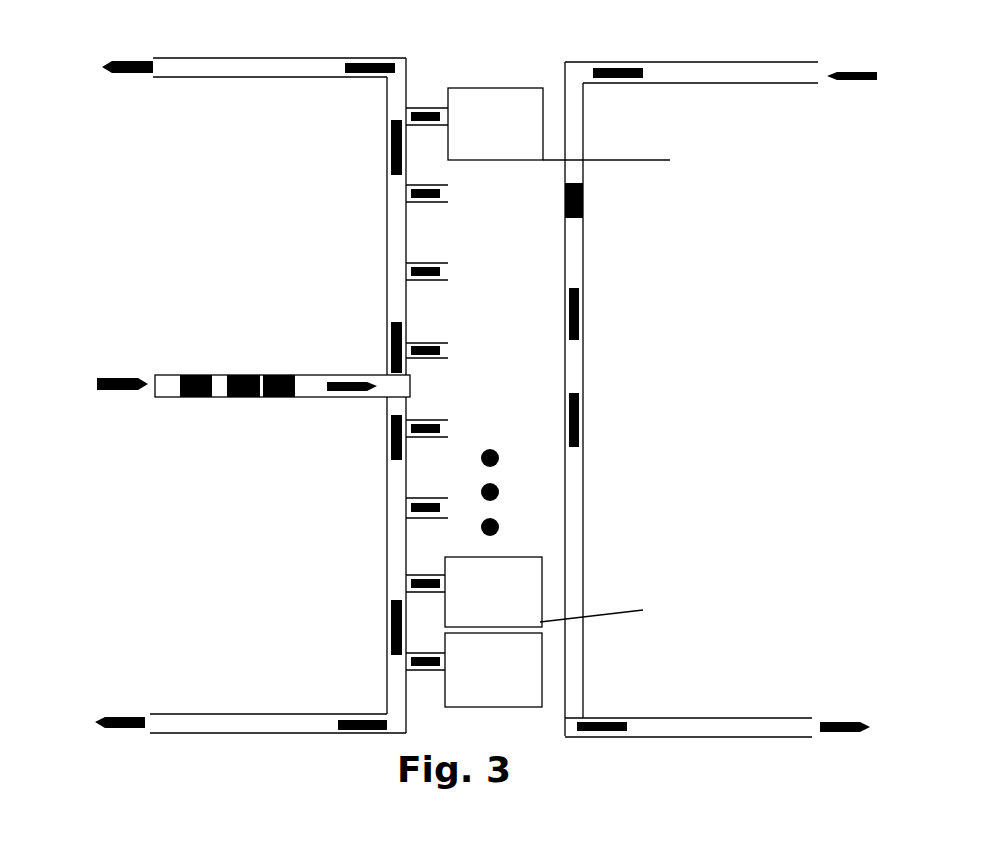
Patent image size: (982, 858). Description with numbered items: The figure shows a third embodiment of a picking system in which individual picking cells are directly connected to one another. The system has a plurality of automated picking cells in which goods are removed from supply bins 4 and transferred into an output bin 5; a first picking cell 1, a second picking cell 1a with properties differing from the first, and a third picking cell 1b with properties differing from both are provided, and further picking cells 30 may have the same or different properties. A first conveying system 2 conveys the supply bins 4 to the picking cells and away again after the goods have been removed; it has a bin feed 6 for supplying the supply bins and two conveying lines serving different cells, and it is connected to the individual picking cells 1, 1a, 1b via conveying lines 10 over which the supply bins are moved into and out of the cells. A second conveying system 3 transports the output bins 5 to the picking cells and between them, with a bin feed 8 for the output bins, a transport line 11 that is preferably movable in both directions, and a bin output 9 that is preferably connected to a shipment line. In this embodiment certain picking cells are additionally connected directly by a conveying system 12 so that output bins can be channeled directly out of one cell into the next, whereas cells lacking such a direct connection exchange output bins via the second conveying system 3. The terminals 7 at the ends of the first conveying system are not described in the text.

The picking cell 1 is at (528, 665).
The second picking cell 1a is at (532, 572).
The third picking cell 1b is at (538, 95).
The first conveying system 2 is at (206, 86).
The second conveying system 3 is at (755, 124).
The supply bin 4 is at (257, 373).
The output bin 5 is at (588, 208).
The bin feed 6 is at (123, 387).
The first bus terminals 7 is at (105, 75).
The bin feed 8 is at (857, 83).
The bin output 9 is at (843, 720).
The conveying lines 10 is at (410, 187).
The transport line 11 is at (583, 468).
The conveying system 12 is at (610, 161).
The further picking cells 30 is at (497, 450).